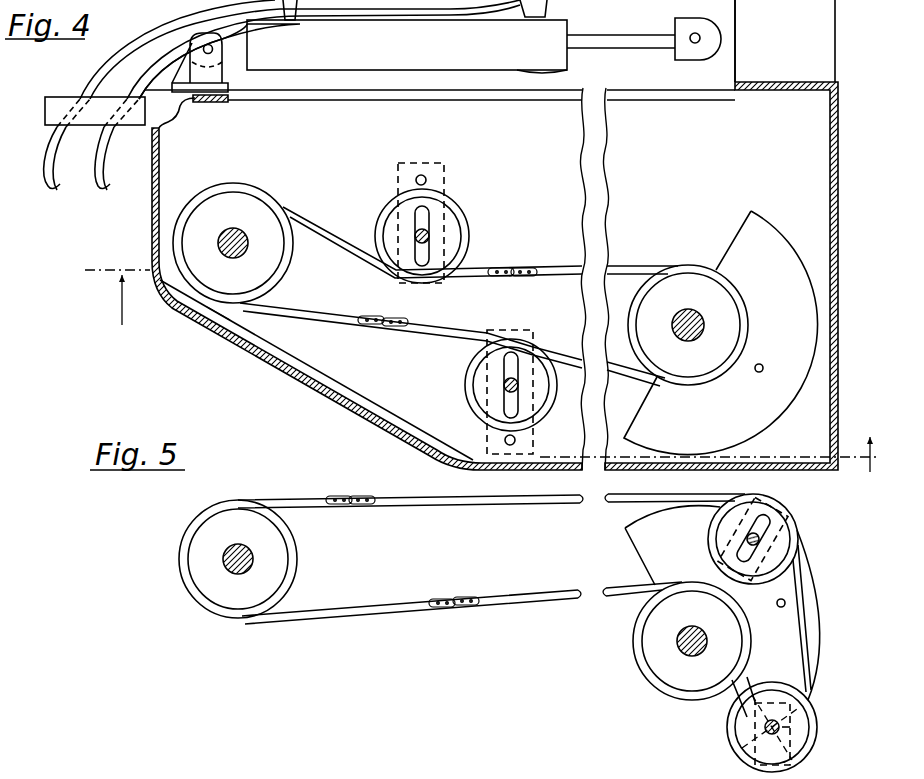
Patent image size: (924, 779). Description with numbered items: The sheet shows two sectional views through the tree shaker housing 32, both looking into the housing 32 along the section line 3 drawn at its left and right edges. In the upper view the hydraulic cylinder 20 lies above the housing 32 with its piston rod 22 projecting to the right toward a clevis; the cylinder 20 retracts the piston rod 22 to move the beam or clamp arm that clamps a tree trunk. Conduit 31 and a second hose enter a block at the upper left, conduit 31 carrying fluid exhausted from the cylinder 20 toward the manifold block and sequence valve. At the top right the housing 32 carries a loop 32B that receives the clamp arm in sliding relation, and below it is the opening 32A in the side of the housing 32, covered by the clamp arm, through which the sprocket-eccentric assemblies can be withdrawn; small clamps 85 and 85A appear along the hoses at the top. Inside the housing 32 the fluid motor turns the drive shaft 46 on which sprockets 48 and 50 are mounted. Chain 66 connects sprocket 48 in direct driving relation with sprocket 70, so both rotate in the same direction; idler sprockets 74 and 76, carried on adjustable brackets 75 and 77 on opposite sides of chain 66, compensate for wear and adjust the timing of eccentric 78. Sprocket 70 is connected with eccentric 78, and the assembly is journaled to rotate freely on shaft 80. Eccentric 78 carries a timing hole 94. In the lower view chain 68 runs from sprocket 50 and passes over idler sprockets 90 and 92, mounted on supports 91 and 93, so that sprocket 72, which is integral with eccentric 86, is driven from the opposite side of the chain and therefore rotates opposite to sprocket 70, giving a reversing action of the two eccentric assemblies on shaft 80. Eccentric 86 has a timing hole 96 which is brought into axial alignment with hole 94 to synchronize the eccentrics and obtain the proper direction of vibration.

In FIG. 4, the section line 3- 3 is at (488, 371).
In FIG. 4, the hydraulic cylinder 20 is at (386, 56).
In FIG. 4, the piston rod 22 is at (628, 56).
In FIG. 4, the conduit 31 is at (140, 18).
In FIG. 4, the tree shaker housing 32 is at (76, 97).
In FIG. 4, the opening 32A is at (692, 90).
In FIG. 4, the loop 32B is at (762, 12).
In FIG. 4, the clamp 85 is at (648, 5).
In FIG. 4, the clamp 85A is at (433, 10).
In FIG. 4, the drive shaft 46 is at (232, 240).
In FIG. 5, the drive shaft 46 is at (236, 557).
In FIG. 4, the sprocket 48 is at (182, 251).
In FIG. 5, the sprocket 50 is at (198, 575).
In FIG. 4, the chain 66 is at (552, 268).
In FIG. 5, the chain 68 is at (336, 500).
In FIG. 4, the sprocket 70 is at (695, 282).
In FIG. 5, the sprocket 72 is at (664, 643).
In FIG. 4, the idler sprocket 74 is at (456, 227).
In FIG. 4, the adjustable bracket 75 is at (487, 445).
In FIG. 4, the idler sprocket 76 is at (466, 385).
In FIG. 4, the adjustable bracket 77 is at (398, 173).
In FIG. 4, the eccentric 78 is at (810, 302).
In FIG. 4, the shaft 80 is at (686, 312).
In FIG. 5, the shaft 80 is at (690, 645).
In FIG. 5, the eccentric 86 is at (815, 637).
In FIG. 5, the idler sprocket 90 is at (765, 735).
In FIG. 5, the support 91 is at (806, 722).
In FIG. 5, the idler sprocket 92 is at (796, 543).
In FIG. 5, the support 93 is at (790, 530).
In FIG. 4, the timing hole 94 is at (762, 364).
In FIG. 5, the timing hole 96 is at (786, 604).